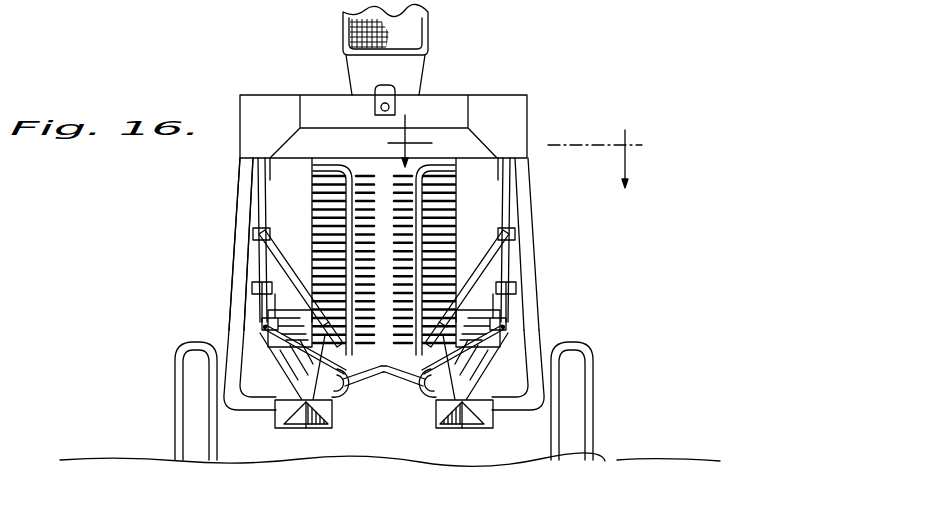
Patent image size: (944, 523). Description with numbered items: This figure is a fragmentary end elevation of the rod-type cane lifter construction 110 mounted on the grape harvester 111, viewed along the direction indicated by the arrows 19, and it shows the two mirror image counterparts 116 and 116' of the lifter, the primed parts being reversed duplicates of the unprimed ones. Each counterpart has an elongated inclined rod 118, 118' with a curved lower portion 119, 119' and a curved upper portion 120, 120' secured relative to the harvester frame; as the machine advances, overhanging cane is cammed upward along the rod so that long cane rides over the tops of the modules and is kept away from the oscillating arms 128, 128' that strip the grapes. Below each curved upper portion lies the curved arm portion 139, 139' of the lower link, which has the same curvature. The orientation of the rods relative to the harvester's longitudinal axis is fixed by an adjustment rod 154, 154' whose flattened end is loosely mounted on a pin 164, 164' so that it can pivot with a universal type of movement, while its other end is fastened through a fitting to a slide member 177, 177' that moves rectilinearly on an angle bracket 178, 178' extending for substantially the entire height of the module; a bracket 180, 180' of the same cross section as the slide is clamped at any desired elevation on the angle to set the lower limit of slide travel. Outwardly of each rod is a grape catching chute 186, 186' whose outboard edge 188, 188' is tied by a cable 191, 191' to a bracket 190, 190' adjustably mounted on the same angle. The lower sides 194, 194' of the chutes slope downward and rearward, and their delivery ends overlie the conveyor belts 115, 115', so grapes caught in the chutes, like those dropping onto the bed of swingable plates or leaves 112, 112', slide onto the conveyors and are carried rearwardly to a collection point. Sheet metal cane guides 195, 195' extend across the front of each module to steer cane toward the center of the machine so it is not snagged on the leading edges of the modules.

The viewing direction arrows 19 is at (514, 151).
The rod-type cane lifter construction 110 is at (200, 230).
The grape harvester 111 is at (505, 97).
The plate or leaf 112 is at (606, 377).
The plate or leaf 112' is at (184, 370).
The conveyor belt 115 is at (496, 414).
The conveyor belt 115' is at (290, 412).
The rod-type cane lifter portion 116 is at (505, 219).
The rod-type cane lifter portion 116' is at (275, 204).
The elongated inclined rod 118 is at (601, 240).
The elongated inclined rod 118' is at (180, 240).
The curved lower portion 119 is at (451, 450).
The curved lower portion 119' is at (325, 448).
The curved upper portion 120 is at (435, 198).
The curved upper portion 120' is at (328, 198).
The oscillating arm 128 is at (526, 237).
The side plate 128' is at (229, 233).
The curved arm portion 139 is at (569, 331).
The pivot bracket 139' is at (209, 330).
The adjustment rod 154 is at (557, 320).
The link rod 154' is at (204, 341).
The pin 164 is at (399, 406).
The center connecting bar 164' is at (366, 401).
The slide member 177 is at (551, 224).
The rod bracket 177' is at (218, 219).
The angle bracket 178 is at (579, 244).
The side post 178' is at (189, 244).
The bracket 180 is at (528, 288).
The hydraulic cylinder 180' is at (238, 287).
The grape catching chute 186 is at (576, 387).
The grape catching chute 186' is at (197, 387).
The outboard edge 188 is at (542, 379).
The elbow 188' is at (233, 372).
The bracket 190 is at (571, 297).
The clamp 190' is at (210, 280).
The cable 191 is at (590, 311).
The rod lower portion 191' is at (188, 305).
The lower side 194 is at (480, 462).
The lower side 194' is at (317, 458).
The sheet metal cane guide 195 is at (513, 258).
The sheet metal cane guide 195' is at (247, 255).